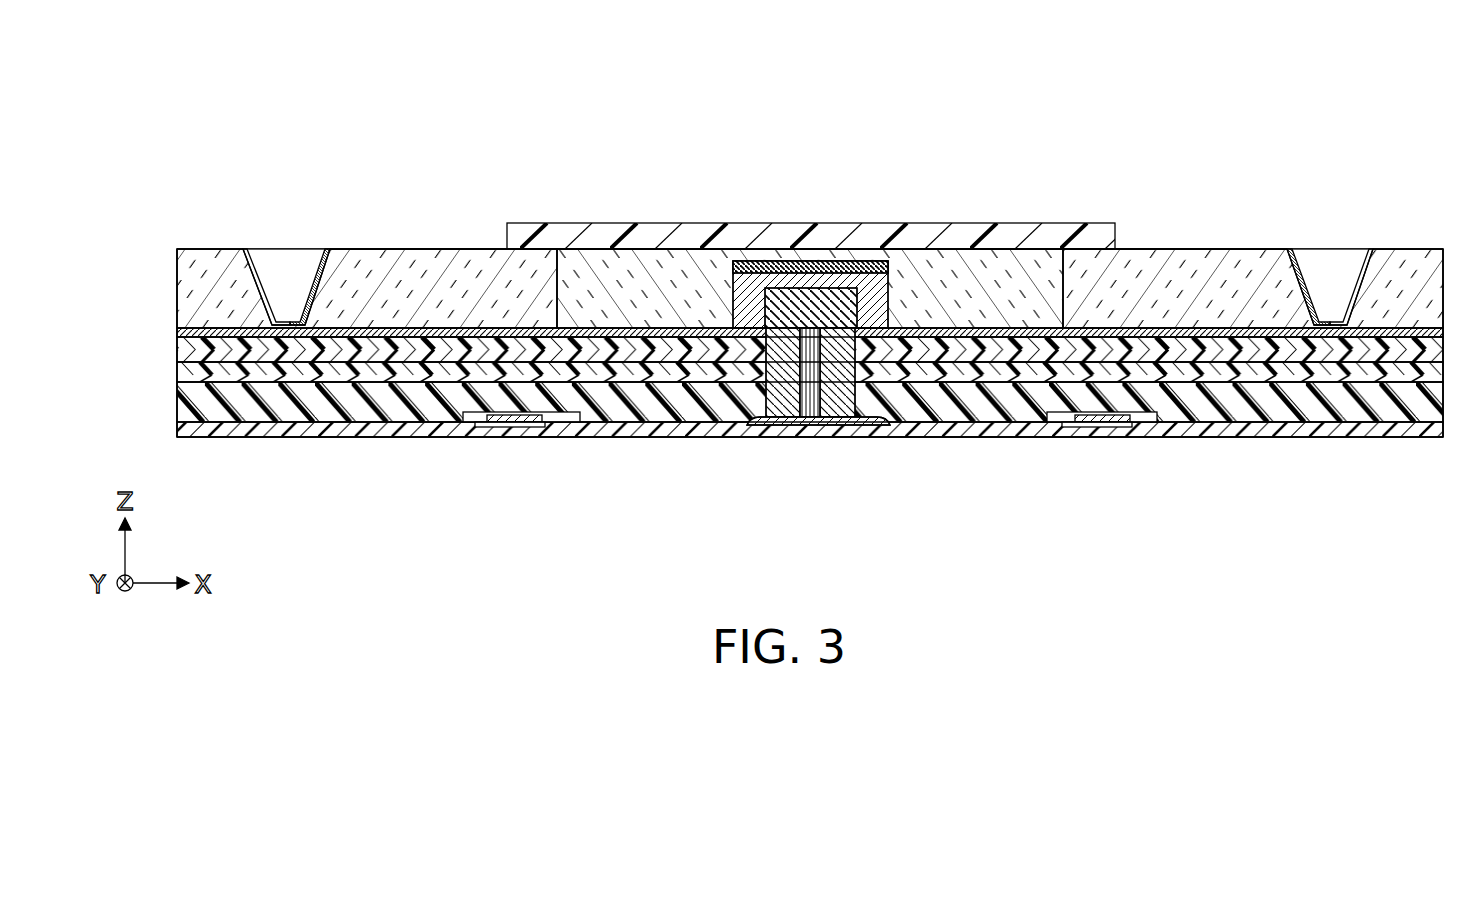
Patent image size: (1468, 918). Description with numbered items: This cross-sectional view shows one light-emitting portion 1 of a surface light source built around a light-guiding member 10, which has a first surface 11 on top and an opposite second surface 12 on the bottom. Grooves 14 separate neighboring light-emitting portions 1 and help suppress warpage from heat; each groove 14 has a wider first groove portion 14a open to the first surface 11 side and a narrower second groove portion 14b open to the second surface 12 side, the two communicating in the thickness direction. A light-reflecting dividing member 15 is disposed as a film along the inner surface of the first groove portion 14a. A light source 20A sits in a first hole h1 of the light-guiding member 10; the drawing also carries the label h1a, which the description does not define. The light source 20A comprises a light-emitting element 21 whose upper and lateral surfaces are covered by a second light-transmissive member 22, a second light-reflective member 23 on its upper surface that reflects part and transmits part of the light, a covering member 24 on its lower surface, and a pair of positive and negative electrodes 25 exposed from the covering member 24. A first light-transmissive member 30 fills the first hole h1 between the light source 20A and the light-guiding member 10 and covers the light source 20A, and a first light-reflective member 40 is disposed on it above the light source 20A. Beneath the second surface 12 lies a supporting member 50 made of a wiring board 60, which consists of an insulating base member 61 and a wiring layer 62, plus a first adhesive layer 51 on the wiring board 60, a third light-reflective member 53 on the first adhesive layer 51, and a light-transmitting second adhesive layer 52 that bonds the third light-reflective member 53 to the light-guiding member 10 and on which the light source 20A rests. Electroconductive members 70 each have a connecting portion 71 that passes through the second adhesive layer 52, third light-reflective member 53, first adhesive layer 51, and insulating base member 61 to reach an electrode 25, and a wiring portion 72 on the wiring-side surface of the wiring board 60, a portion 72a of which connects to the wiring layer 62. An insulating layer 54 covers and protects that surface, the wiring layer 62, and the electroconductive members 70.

The light-emitting portion 1 is at (1142, 206).
The light-guiding member 10 is at (170, 250).
The first surface 11 is at (1205, 250).
The second surface 12 is at (1210, 331).
The groove 14 is at (808, 200).
The first groove portion 14a is at (305, 272).
The second groove portion 14b is at (287, 325).
The dividing member 15 is at (263, 262).
The light source 20A is at (820, 204).
The light-emitting element 21 is at (818, 307).
The second light-transmissive member 22 is at (753, 303).
The second light-reflective member 23 is at (820, 290).
The covering member 24 is at (872, 330).
The electrodes 25 is at (803, 330).
The first light-transmissive member 30 is at (600, 272).
The first light-reflective member 40 is at (662, 235).
The supporting member 50 is at (781, 319).
The first adhesive layer 51 is at (958, 400).
The second adhesive layer 52 is at (1030, 350).
The third light-reflective member 53 is at (1027, 375).
The insulating layer 54 is at (1177, 430).
The wiring board 60 is at (757, 485).
The insulating base member 61 is at (377, 404).
The wiring layer 62 is at (477, 418).
The electroconductive member 70 is at (802, 447).
The connecting portion 71 is at (777, 424).
The wiring portion 72 is at (687, 426).
The portion of the wiring portion 72a is at (803, 483).
The first hole h1 is at (952, 308).
The height h1a is at (557, 257).